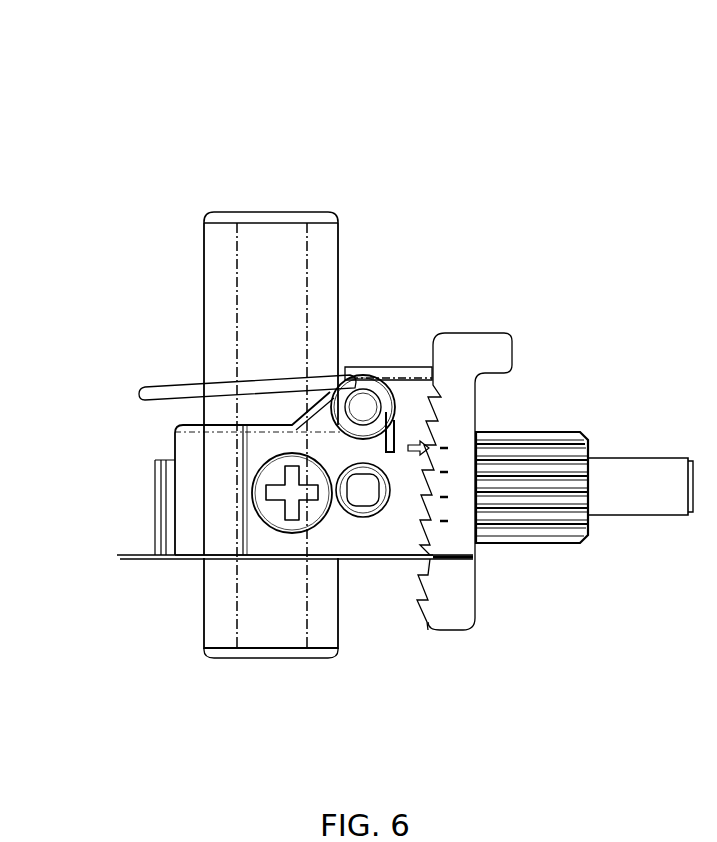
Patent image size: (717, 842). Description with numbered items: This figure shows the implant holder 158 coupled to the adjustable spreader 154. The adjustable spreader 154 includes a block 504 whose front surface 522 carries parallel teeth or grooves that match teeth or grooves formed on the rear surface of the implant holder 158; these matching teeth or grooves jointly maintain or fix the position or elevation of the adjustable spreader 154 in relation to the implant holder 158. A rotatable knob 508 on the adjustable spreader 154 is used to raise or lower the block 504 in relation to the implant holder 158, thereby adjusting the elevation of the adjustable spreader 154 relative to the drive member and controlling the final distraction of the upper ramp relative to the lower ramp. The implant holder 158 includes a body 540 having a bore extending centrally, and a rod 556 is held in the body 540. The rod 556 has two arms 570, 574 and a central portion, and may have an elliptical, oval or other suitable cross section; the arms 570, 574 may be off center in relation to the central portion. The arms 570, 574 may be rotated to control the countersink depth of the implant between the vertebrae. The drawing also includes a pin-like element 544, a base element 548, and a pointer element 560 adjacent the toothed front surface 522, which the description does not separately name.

The implant holder 158 is at (183, 118).
The adjustable spreader 154 is at (584, 603).
The rod 556 is at (290, 212).
The arm 570 is at (221, 280).
The arm 574 is at (258, 627).
The pin 544 is at (178, 377).
The body 540 is at (193, 477).
The base plate 548 is at (117, 557).
The block 504 is at (472, 352).
The rotatable knob 508 is at (535, 430).
The pointer 560 is at (432, 543).
The front surface 522 is at (430, 612).